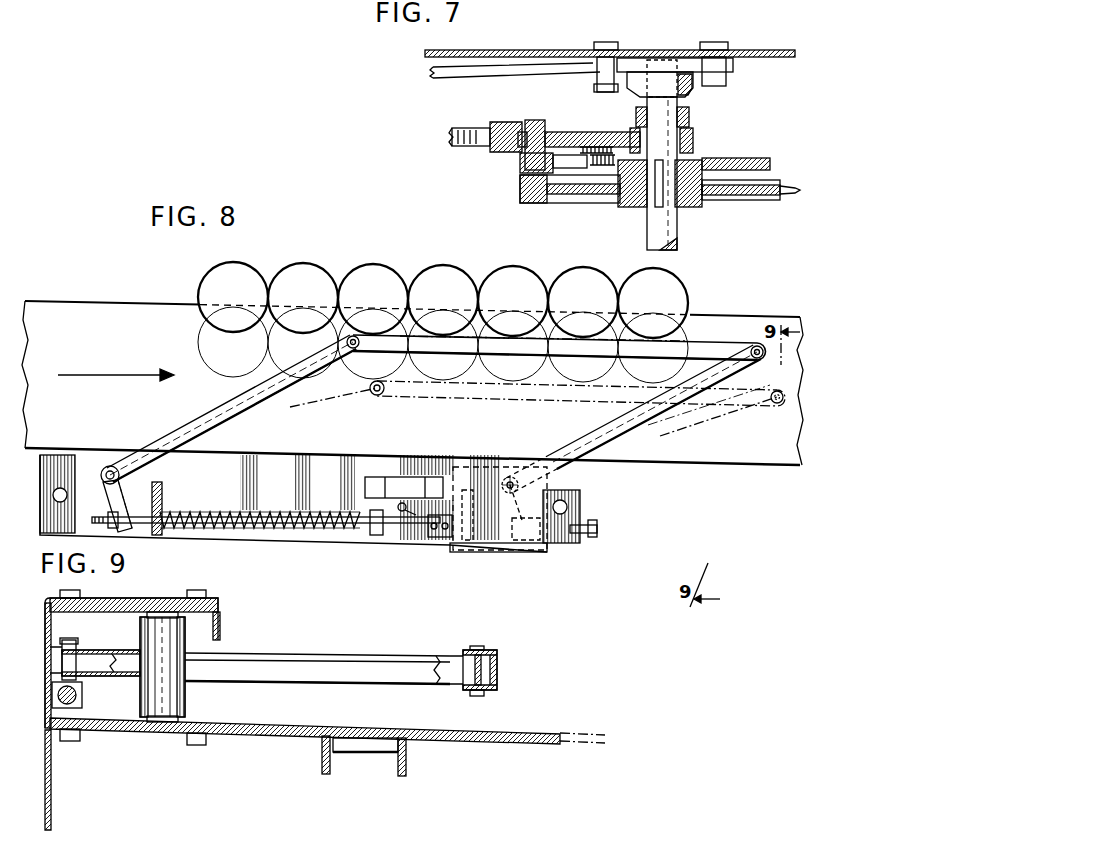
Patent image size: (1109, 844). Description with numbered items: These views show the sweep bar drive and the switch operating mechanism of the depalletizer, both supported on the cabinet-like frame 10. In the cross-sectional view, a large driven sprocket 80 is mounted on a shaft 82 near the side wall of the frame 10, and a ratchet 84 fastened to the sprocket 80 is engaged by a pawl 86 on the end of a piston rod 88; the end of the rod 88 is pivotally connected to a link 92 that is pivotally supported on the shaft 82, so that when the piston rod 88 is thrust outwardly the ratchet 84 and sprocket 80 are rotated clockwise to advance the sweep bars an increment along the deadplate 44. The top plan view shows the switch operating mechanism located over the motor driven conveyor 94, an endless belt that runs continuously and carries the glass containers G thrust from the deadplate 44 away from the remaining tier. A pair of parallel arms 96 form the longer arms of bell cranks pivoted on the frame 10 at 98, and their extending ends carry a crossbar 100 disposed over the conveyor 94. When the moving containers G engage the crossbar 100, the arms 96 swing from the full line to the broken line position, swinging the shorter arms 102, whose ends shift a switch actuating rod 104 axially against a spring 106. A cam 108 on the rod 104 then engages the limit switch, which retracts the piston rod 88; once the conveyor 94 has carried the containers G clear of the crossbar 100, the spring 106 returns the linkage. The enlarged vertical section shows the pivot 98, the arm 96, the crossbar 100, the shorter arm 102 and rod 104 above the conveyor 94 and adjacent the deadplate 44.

In FIG. 7, the frame 10 is at (528, 47).
In FIG. 9, the deadplate 44 is at (565, 733).
In FIG. 7, the driven sprocket 80 is at (745, 196).
In FIG. 7, the shaft 82 is at (648, 238).
In FIG. 7, the ratchet 84 is at (742, 158).
In FIG. 7, the pawl 86 is at (578, 168).
In FIG. 7, the piston rod 88 is at (466, 130).
In FIG. 7, the link 92 is at (585, 135).
In FIG. 8, the conveyor 94 is at (110, 369).
In FIG. 9, the conveyor 94 is at (375, 727).
In FIG. 8, the parallel arms 96 is at (222, 418).
In FIG. 9, the parallel arms 96 is at (323, 663).
In FIG. 8, the pivot 98 is at (112, 466).
In FIG. 9, the pivot 98 is at (165, 612).
In FIG. 8, the crossbar 100 is at (460, 418).
In FIG. 9, the crossbar 100 is at (507, 668).
In FIG. 8, the shorter arms 102 is at (110, 497).
In FIG. 9, the shorter arms 102 is at (118, 658).
In FIG. 8, the switch actuating rod 104 is at (405, 532).
In FIG. 9, the switch actuating rod 104 is at (82, 698).
In FIG. 8, the spring 106 is at (210, 514).
In FIG. 8, the cam 108 is at (420, 542).
In FIG. 8, the glass containers G is at (280, 275).